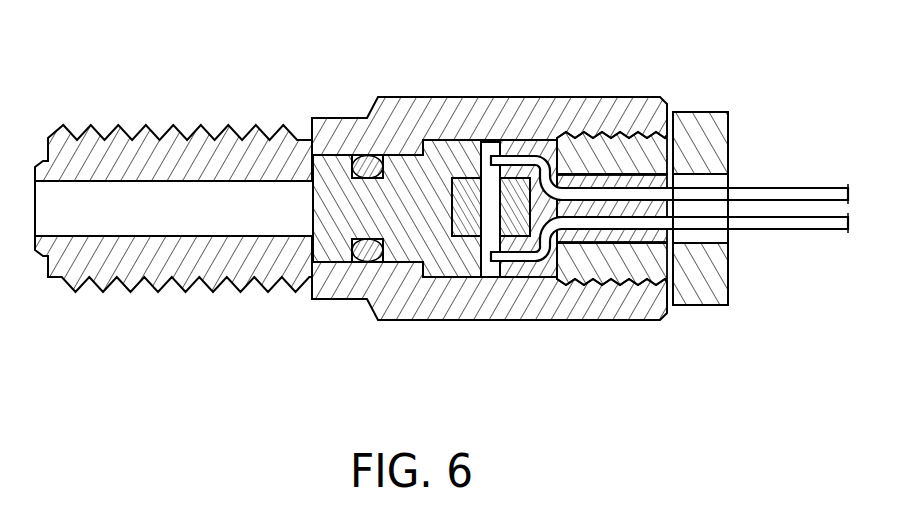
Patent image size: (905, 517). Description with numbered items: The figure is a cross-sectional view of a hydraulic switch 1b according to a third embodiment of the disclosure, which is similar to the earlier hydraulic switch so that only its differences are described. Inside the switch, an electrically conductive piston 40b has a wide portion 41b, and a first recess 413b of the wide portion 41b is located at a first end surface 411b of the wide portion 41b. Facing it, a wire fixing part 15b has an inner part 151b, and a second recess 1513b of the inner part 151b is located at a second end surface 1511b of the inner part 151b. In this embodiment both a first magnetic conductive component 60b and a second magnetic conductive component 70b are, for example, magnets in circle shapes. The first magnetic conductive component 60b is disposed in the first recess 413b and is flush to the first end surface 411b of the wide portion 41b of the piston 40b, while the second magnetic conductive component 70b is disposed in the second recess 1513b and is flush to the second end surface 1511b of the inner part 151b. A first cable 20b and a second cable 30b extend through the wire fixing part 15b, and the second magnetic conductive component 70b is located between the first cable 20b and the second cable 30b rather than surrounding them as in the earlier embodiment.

The hydraulic switch 1b is at (128, 72).
The electrically conductive piston 40b is at (300, 207).
The wide portion 41b is at (445, 253).
The first magnetic conductive component 60b is at (464, 192).
The second magnetic conductive component 70b is at (519, 187).
The first end surface 411b is at (482, 153).
The first recess 413b is at (481, 200).
The second end surface 1511b is at (498, 192).
The second recess 1513b is at (545, 262).
The inner part 151b is at (557, 267).
The wire fixing part 15b is at (703, 314).
The first cable 20b is at (802, 196).
The second cable 30b is at (812, 222).